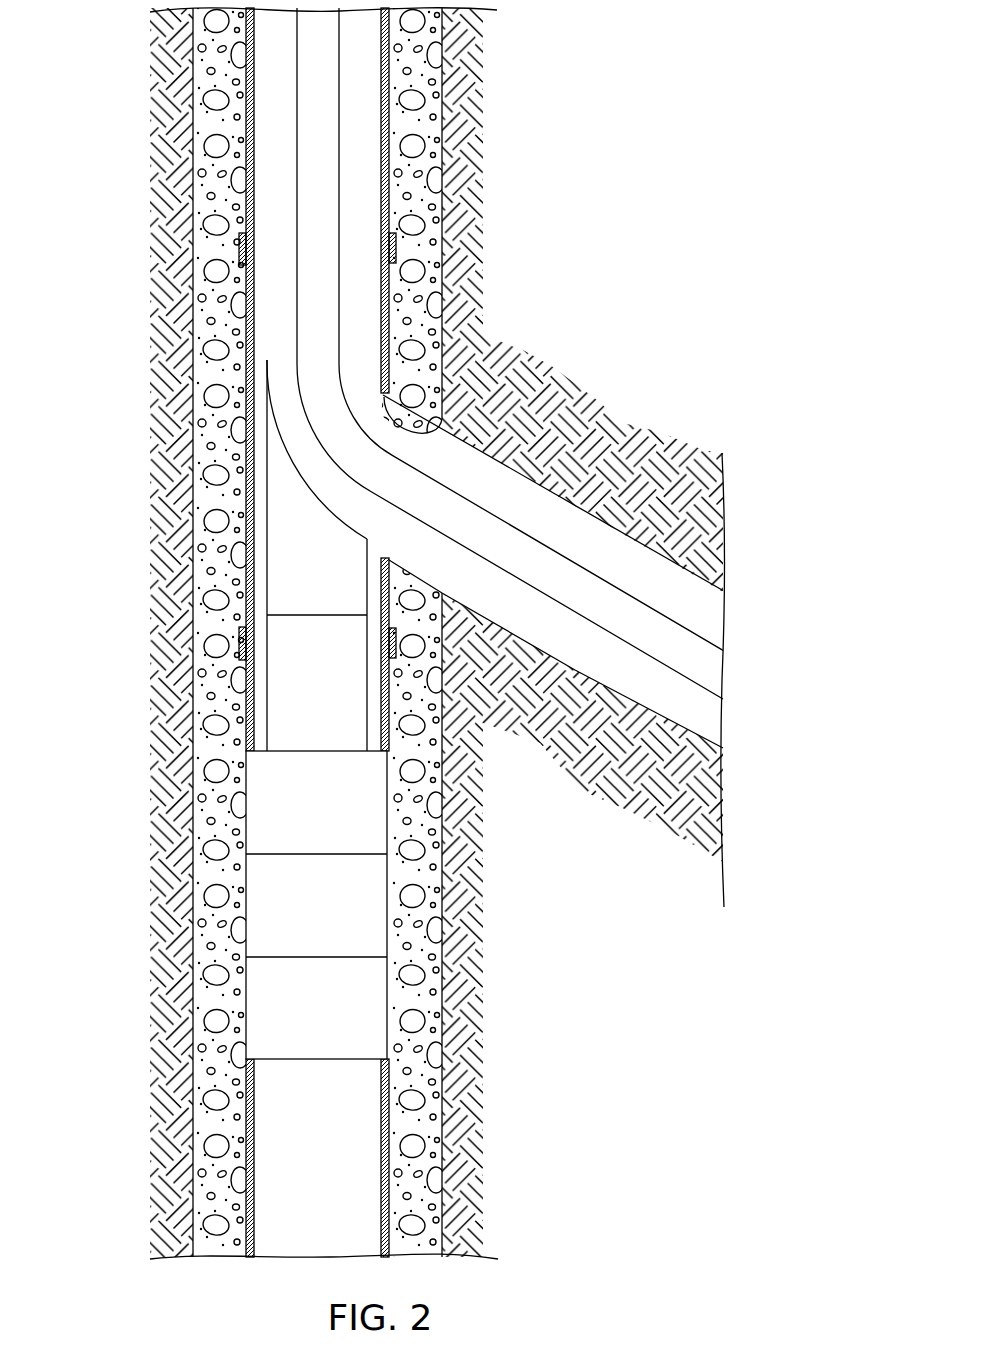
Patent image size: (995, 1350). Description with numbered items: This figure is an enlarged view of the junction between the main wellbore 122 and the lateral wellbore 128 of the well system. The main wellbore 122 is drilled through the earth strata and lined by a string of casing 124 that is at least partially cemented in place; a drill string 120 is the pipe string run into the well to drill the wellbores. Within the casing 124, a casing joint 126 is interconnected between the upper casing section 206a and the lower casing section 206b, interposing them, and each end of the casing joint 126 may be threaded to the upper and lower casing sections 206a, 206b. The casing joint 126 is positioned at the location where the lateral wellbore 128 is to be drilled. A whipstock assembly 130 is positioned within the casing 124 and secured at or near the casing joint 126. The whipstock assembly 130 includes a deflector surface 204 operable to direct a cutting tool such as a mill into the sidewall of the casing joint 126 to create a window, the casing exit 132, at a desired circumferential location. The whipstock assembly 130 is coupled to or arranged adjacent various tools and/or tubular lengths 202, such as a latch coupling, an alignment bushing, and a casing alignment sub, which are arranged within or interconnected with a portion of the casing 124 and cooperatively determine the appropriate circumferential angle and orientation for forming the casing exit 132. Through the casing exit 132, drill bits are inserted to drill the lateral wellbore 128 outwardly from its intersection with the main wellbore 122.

The drill string 120 is at (310, 47).
The main wellbore 122 is at (442, 58).
The casing 124 is at (388, 160).
The casing joint 126 is at (245, 373).
The lateral wellbore 128 is at (550, 490).
The whipstock assembly 130 is at (268, 535).
The casing exit 132 is at (445, 420).
The tools and/or tubular lengths 202 is at (257, 818).
The deflector surface 204 is at (320, 500).
The upper casing section 206a is at (238, 157).
The lower casing section 206b is at (400, 723).